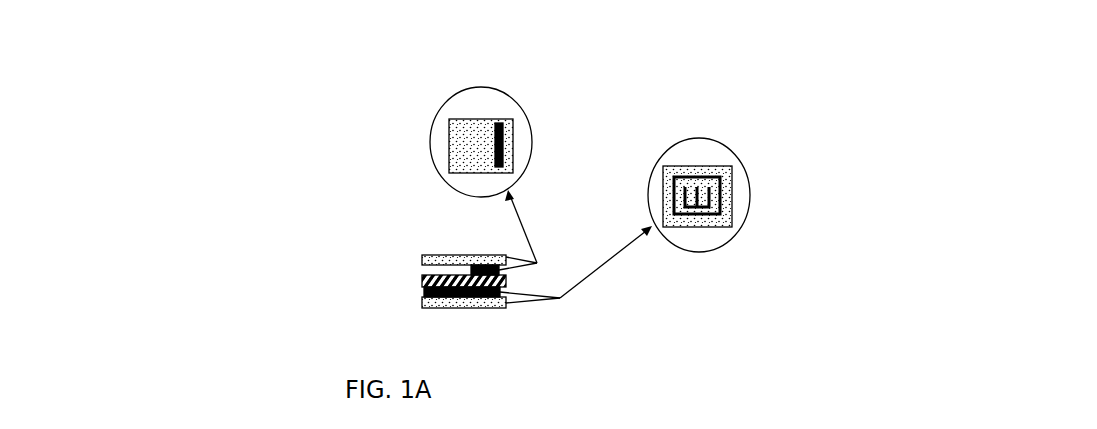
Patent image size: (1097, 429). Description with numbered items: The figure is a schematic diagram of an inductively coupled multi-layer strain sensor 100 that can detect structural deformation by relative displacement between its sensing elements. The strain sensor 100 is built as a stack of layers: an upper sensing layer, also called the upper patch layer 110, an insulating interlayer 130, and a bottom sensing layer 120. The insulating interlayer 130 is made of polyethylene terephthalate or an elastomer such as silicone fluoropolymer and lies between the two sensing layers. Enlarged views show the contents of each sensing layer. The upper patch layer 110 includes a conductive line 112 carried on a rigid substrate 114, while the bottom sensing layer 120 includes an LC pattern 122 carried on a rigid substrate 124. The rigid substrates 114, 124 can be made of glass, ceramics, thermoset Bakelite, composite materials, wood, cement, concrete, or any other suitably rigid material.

The strain sensor 100 is at (388, 266).
The upper patch layer 110 is at (413, 154).
The conductive line 112 is at (524, 100).
The rigid substrate 114 is at (452, 120).
The bottom sensing layer 120 is at (684, 260).
The LC pattern 122 is at (724, 133).
The rigid substrate 124 is at (677, 163).
The insulating interlayer 130 is at (518, 234).